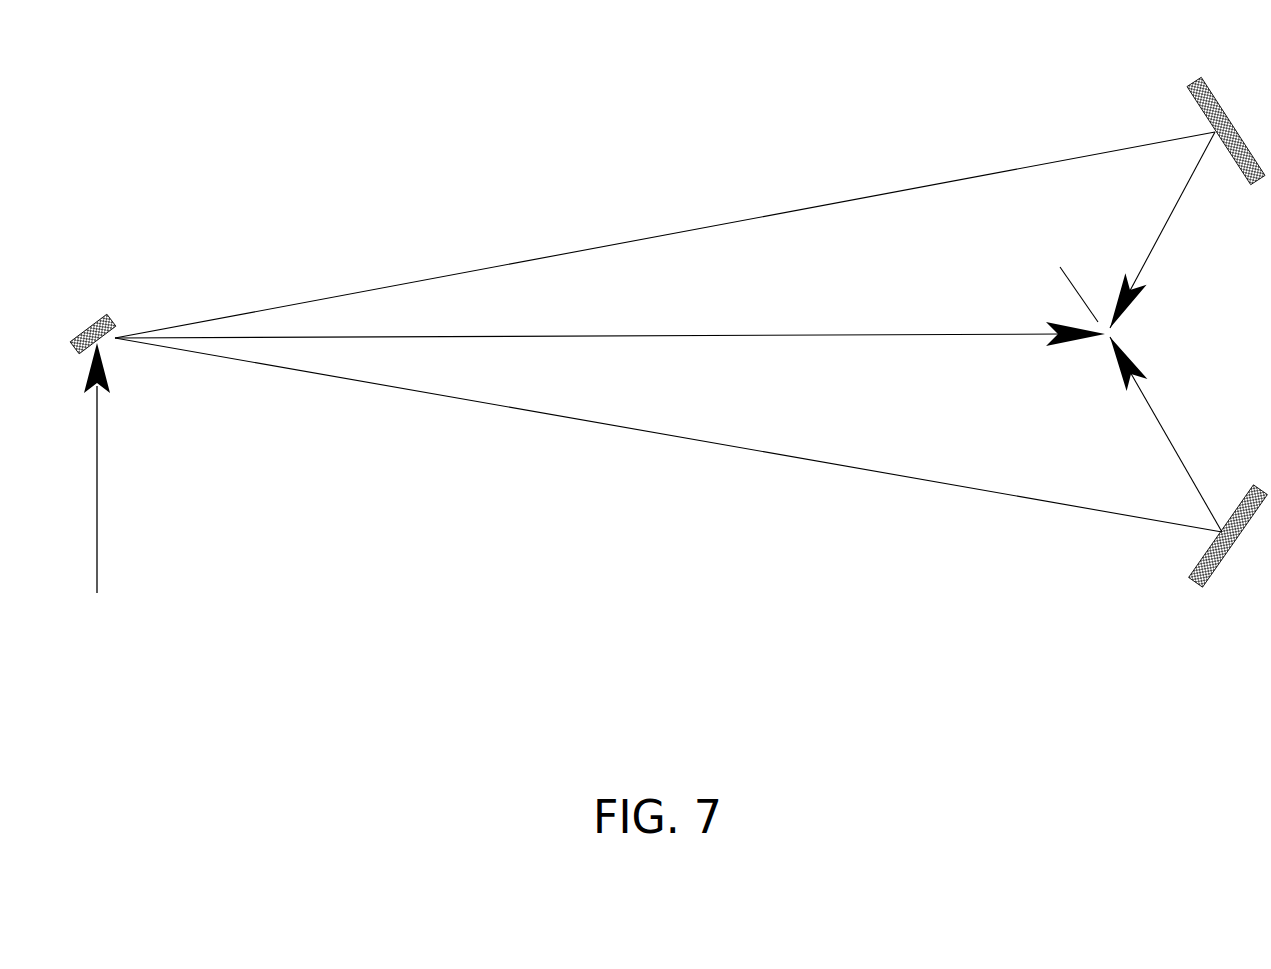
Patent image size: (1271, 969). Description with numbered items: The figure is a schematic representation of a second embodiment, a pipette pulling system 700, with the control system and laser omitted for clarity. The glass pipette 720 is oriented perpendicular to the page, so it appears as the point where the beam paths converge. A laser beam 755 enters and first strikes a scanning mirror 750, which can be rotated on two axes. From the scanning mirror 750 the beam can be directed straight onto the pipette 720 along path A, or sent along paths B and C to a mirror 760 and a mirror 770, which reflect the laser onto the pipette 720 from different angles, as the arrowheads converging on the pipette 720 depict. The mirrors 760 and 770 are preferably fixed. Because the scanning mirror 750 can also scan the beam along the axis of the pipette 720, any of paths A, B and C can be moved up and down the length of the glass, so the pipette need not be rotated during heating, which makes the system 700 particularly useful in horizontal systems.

The pipette pulling system 700 is at (570, 116).
The pipette 720 is at (1110, 337).
The scanning mirror 750 is at (107, 313).
The laser beam 755 is at (103, 527).
The mirror 760 is at (1210, 125).
The mirror 770 is at (1225, 552).